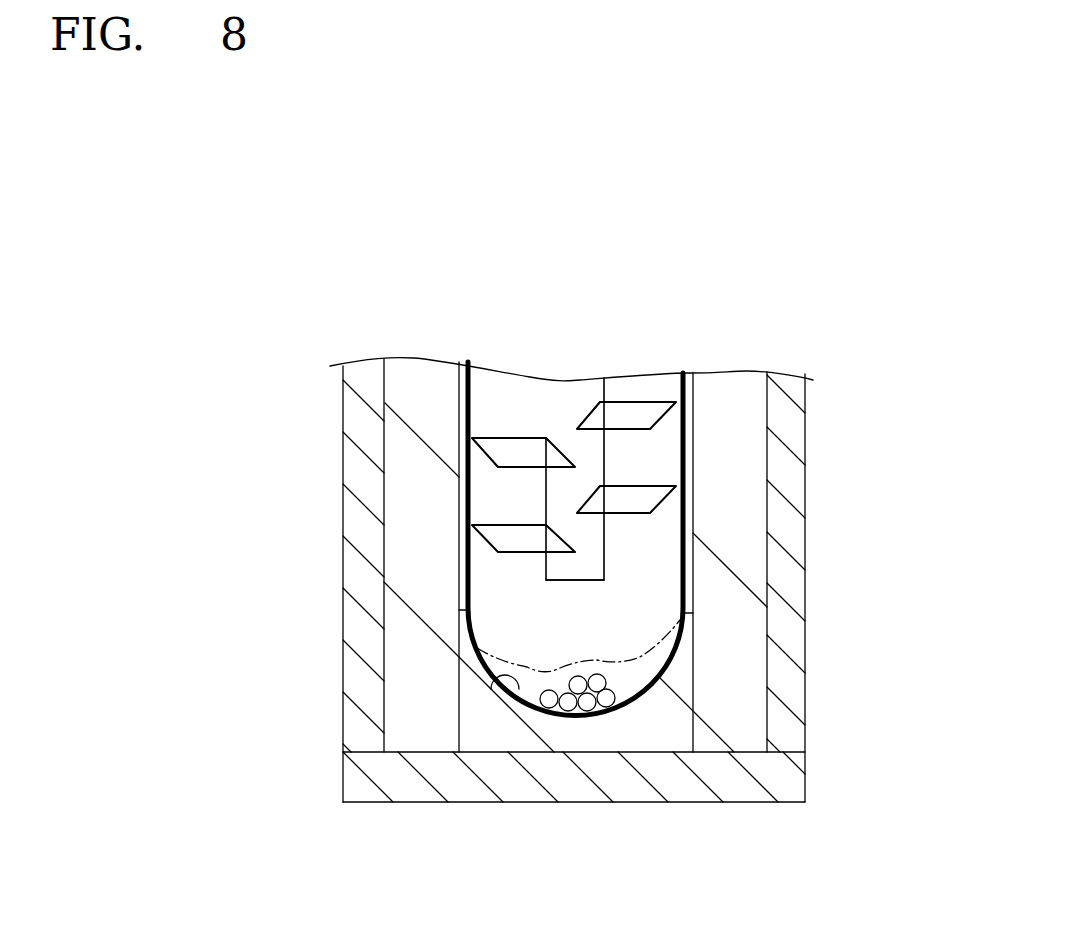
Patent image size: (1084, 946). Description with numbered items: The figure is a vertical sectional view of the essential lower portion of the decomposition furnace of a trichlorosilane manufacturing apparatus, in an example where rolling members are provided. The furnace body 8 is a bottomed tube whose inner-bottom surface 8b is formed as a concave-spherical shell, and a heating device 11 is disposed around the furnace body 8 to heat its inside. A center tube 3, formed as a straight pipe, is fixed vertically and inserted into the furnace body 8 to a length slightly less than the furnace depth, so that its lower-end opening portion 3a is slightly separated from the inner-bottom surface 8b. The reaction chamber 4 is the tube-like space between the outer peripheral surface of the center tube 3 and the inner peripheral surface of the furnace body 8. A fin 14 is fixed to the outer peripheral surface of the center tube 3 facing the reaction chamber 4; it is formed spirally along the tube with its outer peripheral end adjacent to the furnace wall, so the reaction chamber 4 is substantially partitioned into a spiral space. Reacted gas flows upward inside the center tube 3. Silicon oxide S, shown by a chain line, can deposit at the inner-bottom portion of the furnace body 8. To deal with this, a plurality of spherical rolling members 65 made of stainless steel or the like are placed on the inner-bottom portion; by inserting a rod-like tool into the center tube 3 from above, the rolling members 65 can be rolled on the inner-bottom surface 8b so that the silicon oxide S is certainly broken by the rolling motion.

The center tube 3 is at (691, 460).
The lower-end opening portion 3a is at (597, 585).
The reaction chamber 4 is at (502, 487).
The furnace body 8 is at (465, 582).
The inner-bottom surface 8b is at (487, 677).
The heating device 11 is at (385, 418).
The fin 14 is at (652, 422).
The rolling members 65 is at (587, 707).
The silicon oxide S is at (635, 688).